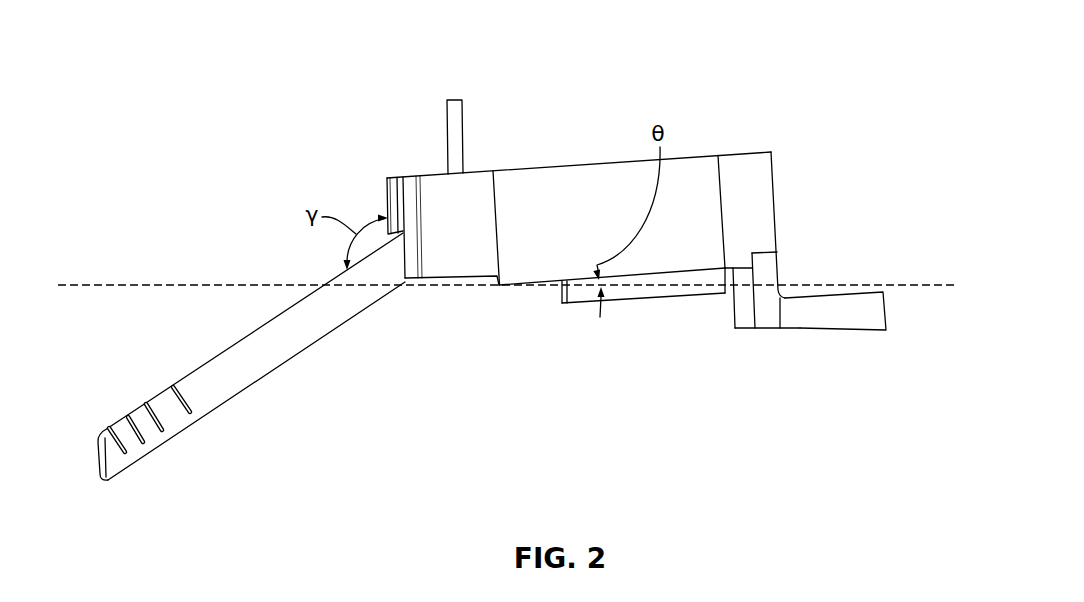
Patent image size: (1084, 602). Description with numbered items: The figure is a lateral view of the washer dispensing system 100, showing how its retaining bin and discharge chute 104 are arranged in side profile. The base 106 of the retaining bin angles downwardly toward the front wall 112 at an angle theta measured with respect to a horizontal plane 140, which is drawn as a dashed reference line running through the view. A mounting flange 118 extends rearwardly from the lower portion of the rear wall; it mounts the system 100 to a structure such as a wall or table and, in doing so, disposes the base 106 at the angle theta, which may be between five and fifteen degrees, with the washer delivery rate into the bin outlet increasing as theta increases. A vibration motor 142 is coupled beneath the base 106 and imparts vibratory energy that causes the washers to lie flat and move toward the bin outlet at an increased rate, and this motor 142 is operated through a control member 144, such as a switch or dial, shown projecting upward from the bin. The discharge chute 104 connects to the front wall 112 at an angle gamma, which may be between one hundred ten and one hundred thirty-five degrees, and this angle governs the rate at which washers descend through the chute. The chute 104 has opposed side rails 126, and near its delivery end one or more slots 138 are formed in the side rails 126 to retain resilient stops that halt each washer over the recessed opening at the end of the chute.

The washer dispensing system 100 is at (224, 53).
The discharge chute 104 is at (251, 379).
The base 106 is at (553, 287).
The front wall 112 is at (398, 194).
The mounting flange 118 is at (888, 310).
The side rails 126 is at (322, 322).
The slots 138 is at (140, 441).
The horizontal plane 140 is at (86, 284).
The vibration motor 142 is at (655, 290).
The control member 144 is at (458, 116).